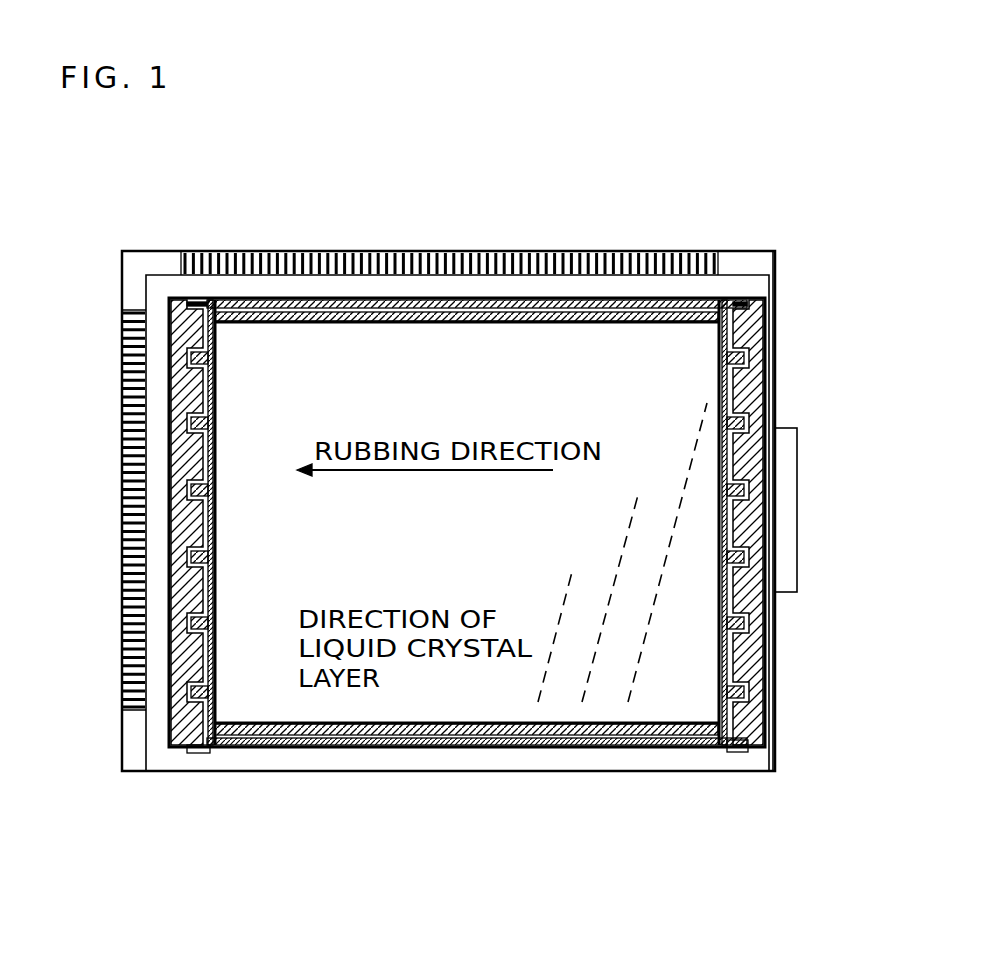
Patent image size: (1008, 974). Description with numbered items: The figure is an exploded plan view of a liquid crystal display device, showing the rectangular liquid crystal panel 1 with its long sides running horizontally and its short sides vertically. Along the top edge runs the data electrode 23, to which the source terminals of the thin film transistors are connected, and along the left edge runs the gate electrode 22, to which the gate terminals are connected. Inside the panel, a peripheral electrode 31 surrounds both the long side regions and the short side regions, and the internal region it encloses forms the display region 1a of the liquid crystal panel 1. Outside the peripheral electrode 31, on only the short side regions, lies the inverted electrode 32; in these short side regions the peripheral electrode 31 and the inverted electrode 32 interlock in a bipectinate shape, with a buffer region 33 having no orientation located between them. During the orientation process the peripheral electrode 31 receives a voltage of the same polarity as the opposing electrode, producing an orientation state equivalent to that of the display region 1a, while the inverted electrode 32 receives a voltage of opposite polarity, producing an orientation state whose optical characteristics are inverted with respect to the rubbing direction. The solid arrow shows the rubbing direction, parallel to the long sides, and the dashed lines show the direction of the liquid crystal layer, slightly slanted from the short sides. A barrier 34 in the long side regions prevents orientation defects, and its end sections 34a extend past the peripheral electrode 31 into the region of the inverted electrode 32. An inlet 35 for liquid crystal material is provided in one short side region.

The liquid crystal panel 1 is at (173, 330).
The display region 1a is at (355, 342).
The gate electrode 22 is at (127, 465).
The data electrode 23 is at (515, 252).
The peripheral electrode 31 is at (202, 697).
The inverted electrode 32 is at (172, 592).
The buffer region 33 is at (202, 638).
The barrier 34 is at (427, 303).
The end sections 34a is at (741, 301).
The inlet 35 is at (787, 457).